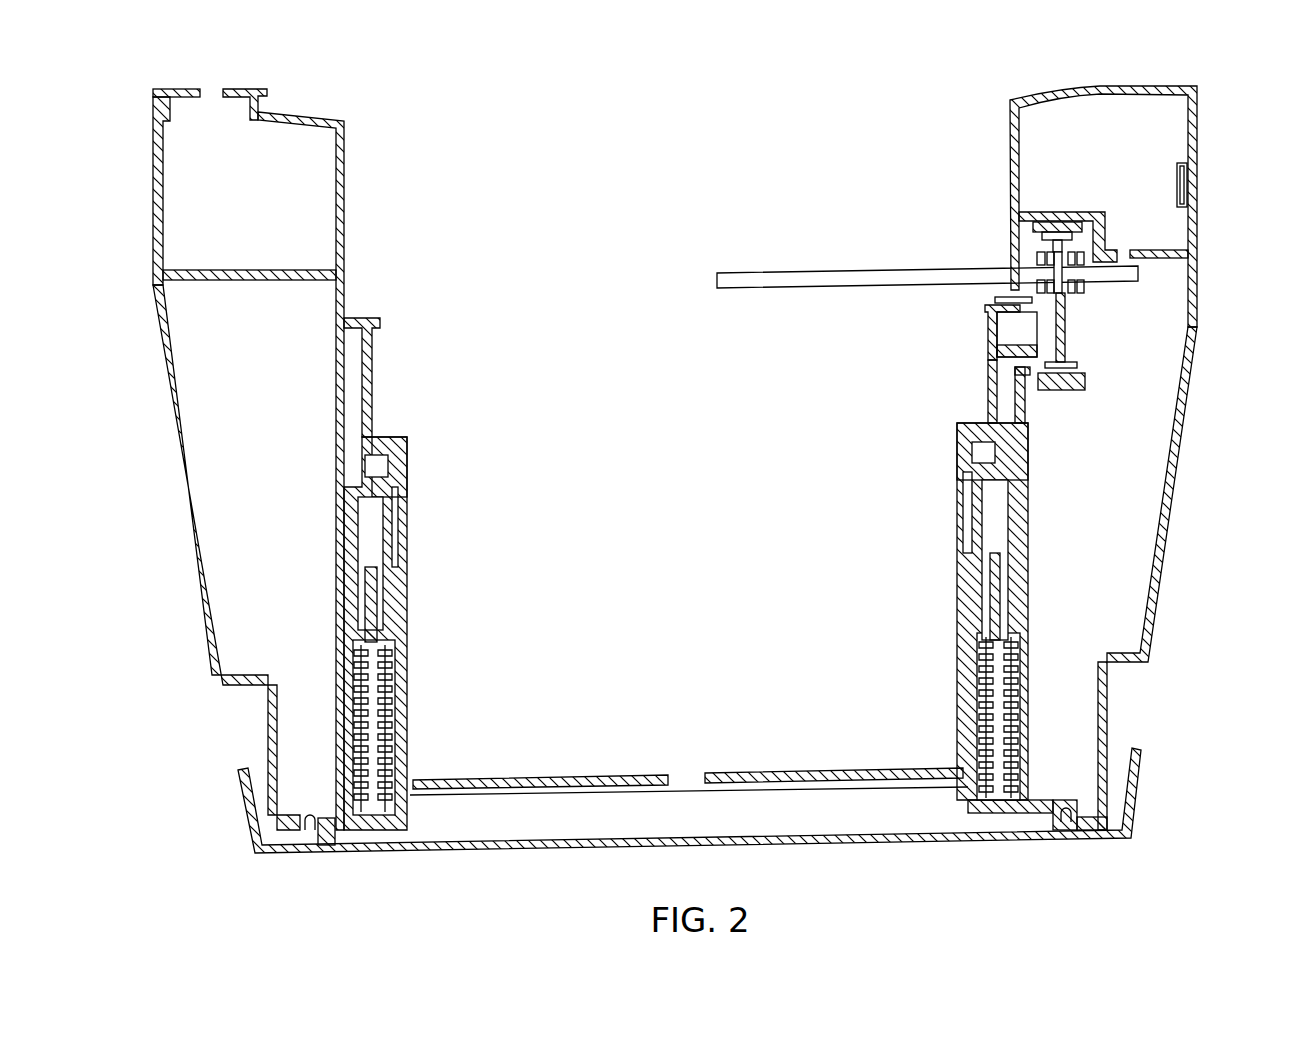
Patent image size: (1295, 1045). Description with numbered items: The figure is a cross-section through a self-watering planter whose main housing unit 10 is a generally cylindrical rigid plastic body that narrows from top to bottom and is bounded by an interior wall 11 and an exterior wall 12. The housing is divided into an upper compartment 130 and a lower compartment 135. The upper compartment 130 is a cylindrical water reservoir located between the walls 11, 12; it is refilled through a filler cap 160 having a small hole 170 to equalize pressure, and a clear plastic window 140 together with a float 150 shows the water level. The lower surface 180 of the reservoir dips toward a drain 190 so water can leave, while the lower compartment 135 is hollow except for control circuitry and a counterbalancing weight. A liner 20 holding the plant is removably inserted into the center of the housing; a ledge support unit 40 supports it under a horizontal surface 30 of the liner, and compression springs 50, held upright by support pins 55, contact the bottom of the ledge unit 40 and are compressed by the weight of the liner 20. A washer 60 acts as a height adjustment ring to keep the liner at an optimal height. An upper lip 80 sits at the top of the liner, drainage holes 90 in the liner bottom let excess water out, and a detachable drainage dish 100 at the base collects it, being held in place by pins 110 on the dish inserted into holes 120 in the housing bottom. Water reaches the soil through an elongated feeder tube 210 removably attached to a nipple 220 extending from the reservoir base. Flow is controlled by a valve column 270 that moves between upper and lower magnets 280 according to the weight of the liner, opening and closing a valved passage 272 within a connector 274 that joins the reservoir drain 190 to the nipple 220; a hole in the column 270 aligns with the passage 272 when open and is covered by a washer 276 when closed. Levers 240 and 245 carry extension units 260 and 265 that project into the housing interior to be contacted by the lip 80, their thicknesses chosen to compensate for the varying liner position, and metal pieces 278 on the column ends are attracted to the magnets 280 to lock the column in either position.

The main housing unit 10 is at (168, 405).
The interior wall 11 is at (344, 190).
The exterior wall 12 is at (153, 193).
The liner 20 is at (407, 445).
The horizontal surface 30 is at (385, 437).
The ledge support unit 40 is at (368, 540).
The compression springs 50 is at (383, 740).
The support pins 55 is at (380, 668).
The washer 60 is at (388, 468).
The upper lip 80 is at (385, 318).
The drainage holes 90 is at (685, 775).
The drainage dish 100 is at (243, 790).
The pins 110 is at (309, 818).
The holes 120 is at (323, 845).
The upper compartment 130 is at (218, 206).
The lower compartment 135 is at (243, 538).
The clear plastic window 140 is at (1198, 225).
The float 150 is at (1178, 178).
The filler cap 160 is at (262, 88).
The small hole 170 is at (207, 85).
The lower surface 180 is at (237, 270).
The drain 190 is at (1122, 250).
The feeder tube 210 is at (745, 273).
The nipple 220 is at (1050, 268).
The lever 240 is at (1000, 340).
The lever 245 is at (1025, 375).
The upper extension unit 260 is at (995, 300).
The lower extension unit 265 is at (990, 365).
The valve column 270 is at (1066, 345).
The valved passage 272 is at (1090, 270).
The connector 274 is at (1085, 288).
The washer 276 is at (1066, 300).
The metal pieces 278 is at (1032, 232).
The magnets 280 is at (1053, 222).